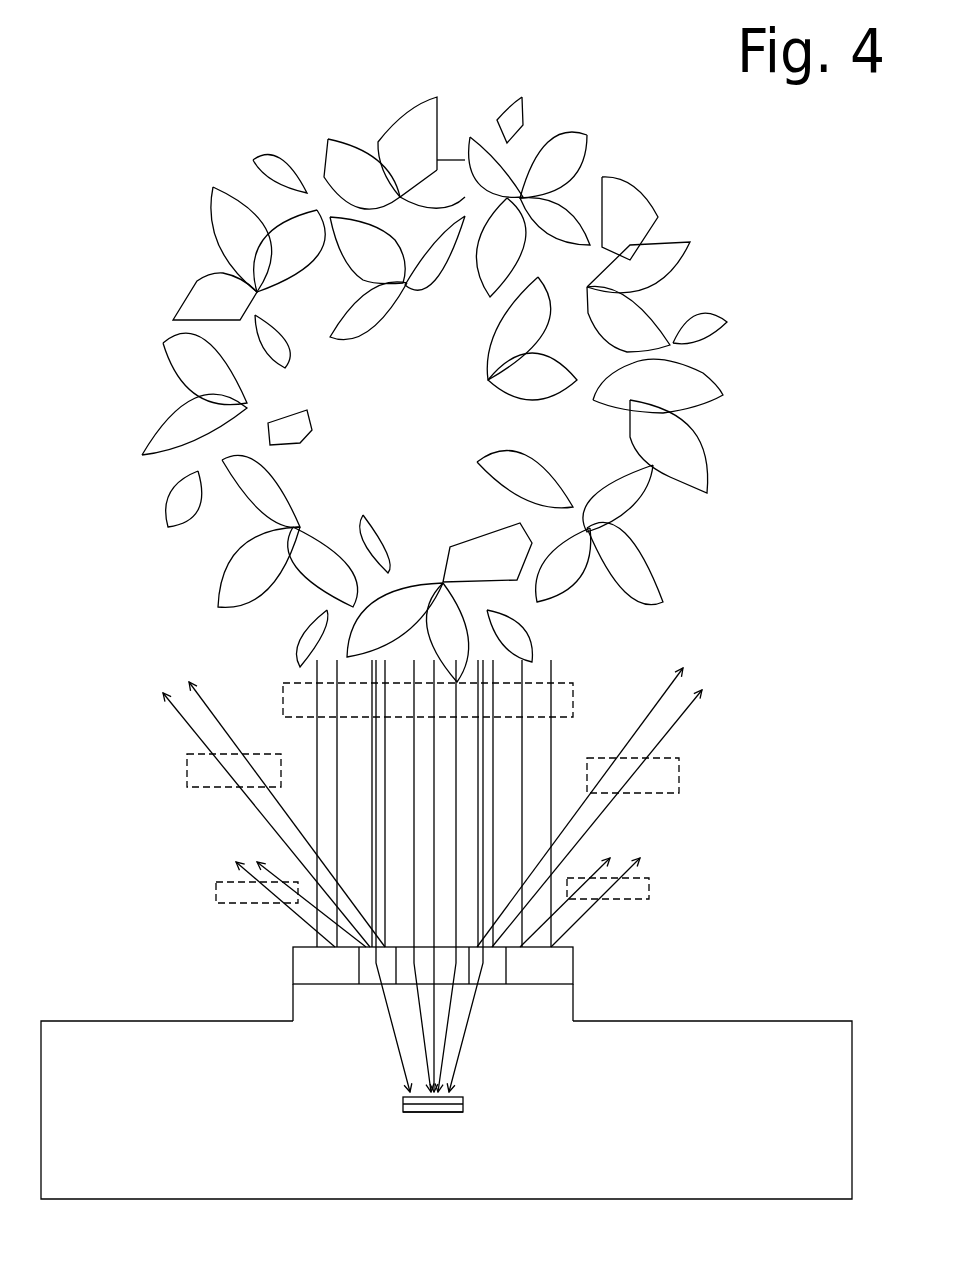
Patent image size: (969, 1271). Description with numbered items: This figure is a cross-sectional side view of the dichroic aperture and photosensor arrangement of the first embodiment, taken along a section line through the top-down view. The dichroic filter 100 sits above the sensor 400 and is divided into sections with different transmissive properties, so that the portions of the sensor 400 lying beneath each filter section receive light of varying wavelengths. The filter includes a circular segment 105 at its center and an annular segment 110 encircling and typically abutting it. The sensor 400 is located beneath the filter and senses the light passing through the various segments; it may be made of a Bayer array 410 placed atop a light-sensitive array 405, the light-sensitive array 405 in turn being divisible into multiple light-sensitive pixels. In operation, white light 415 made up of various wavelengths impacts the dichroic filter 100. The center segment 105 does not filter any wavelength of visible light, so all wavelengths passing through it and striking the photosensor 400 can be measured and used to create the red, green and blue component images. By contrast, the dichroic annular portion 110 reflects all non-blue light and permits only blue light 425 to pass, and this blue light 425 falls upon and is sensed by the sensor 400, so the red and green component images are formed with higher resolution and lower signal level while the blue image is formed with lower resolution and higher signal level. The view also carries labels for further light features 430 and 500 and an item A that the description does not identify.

The illuminated object (wreath) A is at (434, 389).
The dichroic filter 100 is at (592, 960).
The circular segment 105 is at (495, 991).
The annular segment 110 is at (315, 991).
The sensor 400 is at (396, 1109).
The light-sensitive array 405 is at (456, 1117).
The Bayer array 410 is at (466, 1097).
The white light 415 is at (575, 700).
The blue light 425 is at (681, 770).
The lower right light region 430 is at (651, 886).
The side light regions 500 is at (186, 768).